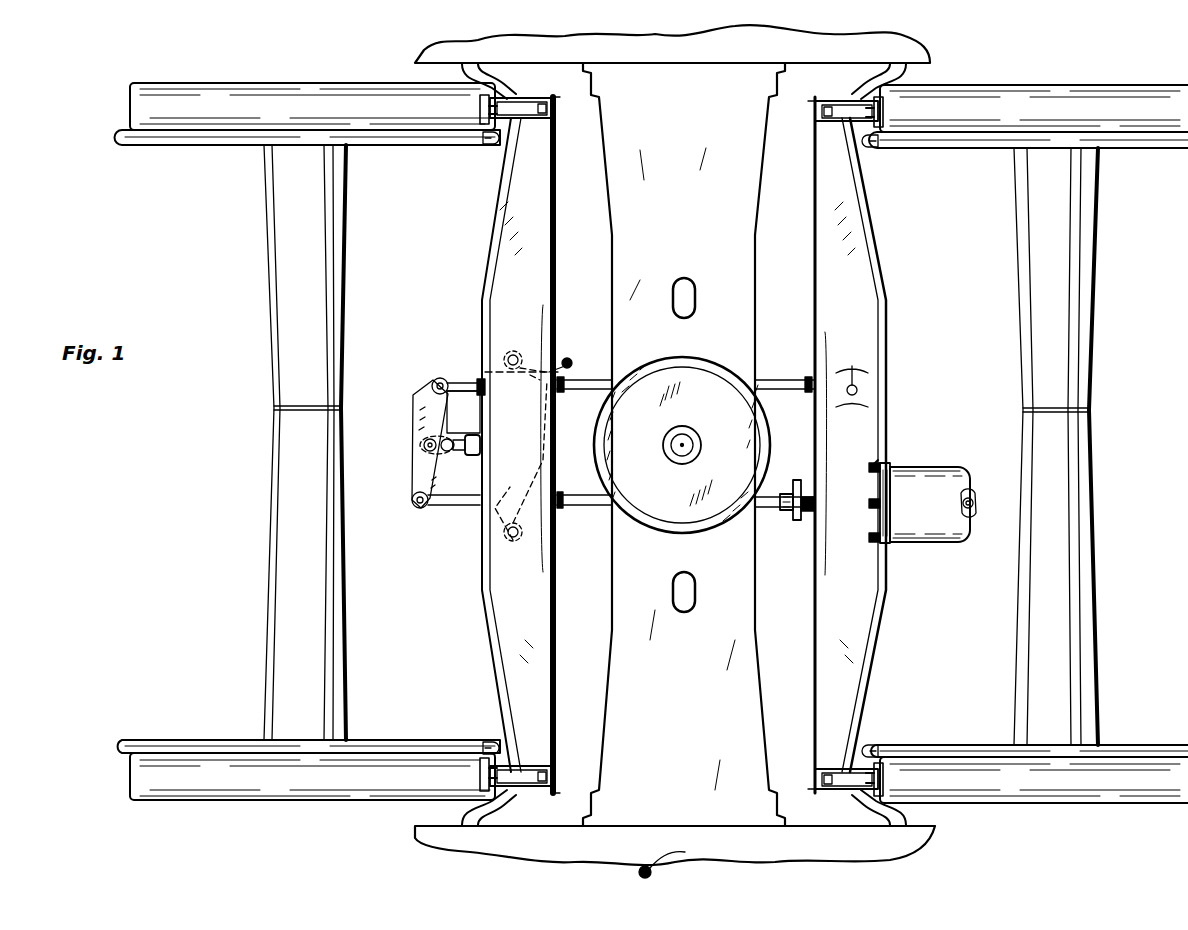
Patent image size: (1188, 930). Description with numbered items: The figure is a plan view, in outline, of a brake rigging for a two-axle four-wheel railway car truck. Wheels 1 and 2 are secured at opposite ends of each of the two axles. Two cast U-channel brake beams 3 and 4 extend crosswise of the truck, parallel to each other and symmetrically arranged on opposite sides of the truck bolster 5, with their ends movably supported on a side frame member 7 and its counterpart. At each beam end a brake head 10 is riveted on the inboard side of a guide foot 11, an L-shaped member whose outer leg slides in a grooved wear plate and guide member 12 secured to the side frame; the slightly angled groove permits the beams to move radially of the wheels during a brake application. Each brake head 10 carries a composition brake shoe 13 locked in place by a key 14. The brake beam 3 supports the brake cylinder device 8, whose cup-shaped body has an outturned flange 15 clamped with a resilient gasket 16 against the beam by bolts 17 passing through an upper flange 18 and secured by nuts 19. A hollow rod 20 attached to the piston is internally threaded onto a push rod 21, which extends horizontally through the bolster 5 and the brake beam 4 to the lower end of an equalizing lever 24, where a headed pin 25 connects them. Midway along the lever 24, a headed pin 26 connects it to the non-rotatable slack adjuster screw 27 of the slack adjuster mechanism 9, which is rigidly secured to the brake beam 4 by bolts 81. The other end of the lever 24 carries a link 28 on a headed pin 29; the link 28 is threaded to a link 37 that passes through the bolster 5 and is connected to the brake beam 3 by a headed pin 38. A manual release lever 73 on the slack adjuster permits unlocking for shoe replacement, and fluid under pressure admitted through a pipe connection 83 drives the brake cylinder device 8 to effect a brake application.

The wheel 1 is at (1152, 102).
The wheel 2 is at (230, 100).
The brake beam 3 is at (848, 672).
The brake beam 4 is at (522, 668).
The truck bolster 5 is at (736, 680).
The side frame member 7 is at (698, 48).
The brake cylinder device 8 is at (946, 478).
The slack adjuster mechanism 9 is at (500, 508).
The brake head 10 is at (524, 112).
The guide foot 11 is at (556, 98).
The wear plate and guide member 12 is at (527, 80).
The brake shoe 13 is at (486, 144).
The key 14 is at (480, 108).
The outturned flange 15 is at (880, 463).
The gasket 16 is at (890, 488).
The bolt 17 is at (888, 468).
The upper flange 18 is at (880, 420).
The nut 19 is at (872, 534).
The hollow rod 20 is at (803, 518).
The push rod 21 is at (586, 506).
The equalizing lever 24 is at (412, 470).
The headed pin 25 is at (419, 508).
The headed pin 26 is at (424, 445).
The slack adjuster screw 27 is at (455, 452).
The link 28 is at (463, 384).
The headed pin 29 is at (432, 386).
The link 37 is at (582, 388).
The headed pin 38 is at (852, 376).
The manual release lever 73 is at (563, 360).
The bolt 81 is at (513, 354).
The pipe connection 83 is at (976, 507).